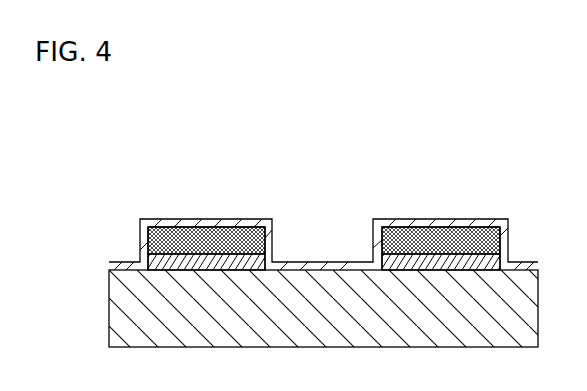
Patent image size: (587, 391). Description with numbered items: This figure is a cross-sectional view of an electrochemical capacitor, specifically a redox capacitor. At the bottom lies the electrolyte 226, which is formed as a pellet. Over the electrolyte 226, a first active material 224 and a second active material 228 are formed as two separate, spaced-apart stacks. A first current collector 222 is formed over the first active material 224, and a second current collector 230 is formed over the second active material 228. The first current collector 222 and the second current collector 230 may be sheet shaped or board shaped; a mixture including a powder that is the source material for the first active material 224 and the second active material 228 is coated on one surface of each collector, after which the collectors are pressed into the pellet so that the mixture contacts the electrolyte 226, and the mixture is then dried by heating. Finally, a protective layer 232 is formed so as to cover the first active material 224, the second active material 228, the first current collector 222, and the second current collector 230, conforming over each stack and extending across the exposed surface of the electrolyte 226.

The first current collector 222 is at (223, 240).
The first active material 224 is at (183, 263).
The electrolyte 226 is at (293, 300).
The second active material 228 is at (417, 265).
The second current collector 230 is at (456, 242).
The protective layer 232 is at (340, 262).